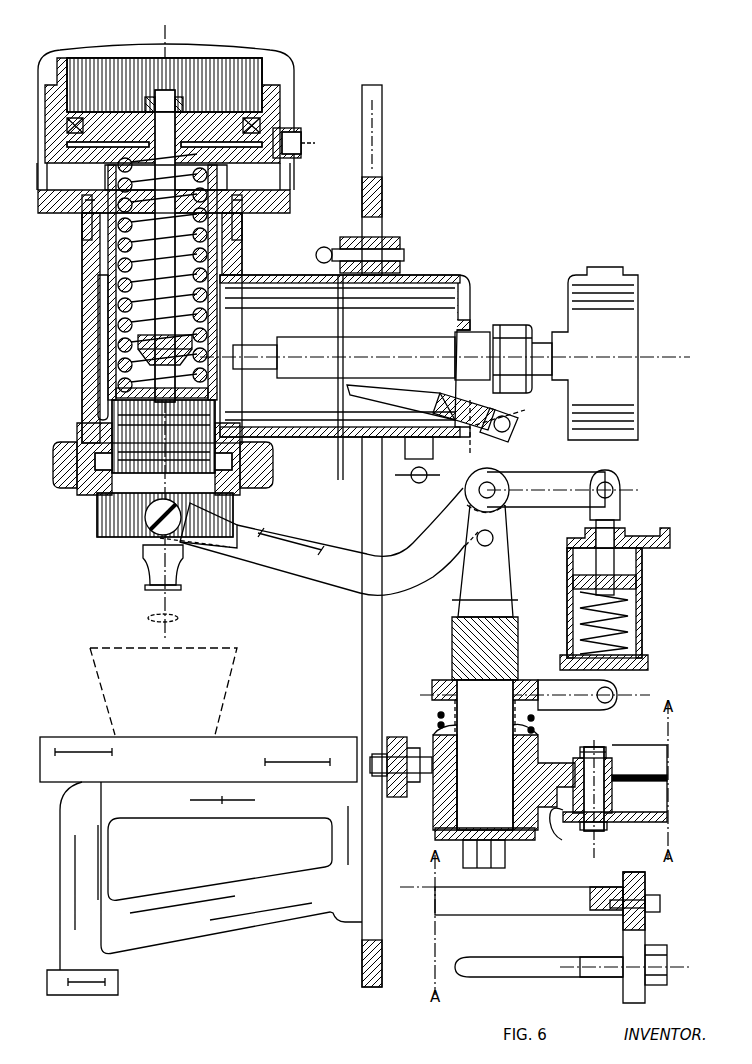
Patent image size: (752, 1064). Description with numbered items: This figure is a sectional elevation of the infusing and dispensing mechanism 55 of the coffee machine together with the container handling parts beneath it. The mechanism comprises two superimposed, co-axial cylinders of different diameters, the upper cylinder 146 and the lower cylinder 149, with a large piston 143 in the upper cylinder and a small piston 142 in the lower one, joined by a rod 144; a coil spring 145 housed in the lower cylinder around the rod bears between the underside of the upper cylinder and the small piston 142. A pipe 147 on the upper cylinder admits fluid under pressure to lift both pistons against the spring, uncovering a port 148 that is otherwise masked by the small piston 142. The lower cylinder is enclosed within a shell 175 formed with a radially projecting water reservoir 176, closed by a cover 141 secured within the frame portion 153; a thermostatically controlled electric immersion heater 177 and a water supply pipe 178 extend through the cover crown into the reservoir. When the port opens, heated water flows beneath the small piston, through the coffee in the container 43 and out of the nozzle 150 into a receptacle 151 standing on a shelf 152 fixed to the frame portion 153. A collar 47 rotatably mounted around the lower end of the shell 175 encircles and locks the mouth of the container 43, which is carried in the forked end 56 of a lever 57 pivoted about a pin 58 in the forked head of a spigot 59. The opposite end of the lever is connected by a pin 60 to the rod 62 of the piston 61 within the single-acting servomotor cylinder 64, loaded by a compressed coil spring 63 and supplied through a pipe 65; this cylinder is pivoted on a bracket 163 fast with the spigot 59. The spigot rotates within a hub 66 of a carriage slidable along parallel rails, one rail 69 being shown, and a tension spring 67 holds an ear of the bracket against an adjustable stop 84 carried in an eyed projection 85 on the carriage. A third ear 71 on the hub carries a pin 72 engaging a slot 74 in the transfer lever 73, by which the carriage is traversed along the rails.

The upper cylinder 146 is at (57, 105).
The large piston 143 is at (205, 112).
The pipe 147 is at (300, 128).
The rod 144 is at (157, 215).
The coil spring 145 is at (108, 285).
The lower cylinder 149 is at (116, 330).
The infusing and dispensing mechanism 55 is at (76, 369).
The small piston 142 is at (112, 440).
The shell 175 is at (100, 450).
The collar 47 is at (64, 488).
The port 148 is at (265, 482).
The container 43 is at (100, 537).
The coffee dispensing nozzle 150 is at (150, 590).
The forked end 56 is at (226, 548).
The lever 57 is at (318, 572).
The frame portion 153 is at (360, 945).
The water reservoir 176 is at (300, 270).
The cover 141 is at (467, 265).
The electric immersion heater 177 is at (575, 290).
The water supply pipe 178 is at (510, 415).
The pin 58 is at (492, 487).
The pin 60 is at (612, 487).
The rod 62 is at (606, 548).
The pipe 65 is at (660, 535).
The single-acting servomotor cylinder 64 is at (567, 565).
The piston 61 is at (630, 580).
The compressed coil spring 63 is at (620, 625).
The spigot 59 is at (465, 612).
The bracket 163 is at (553, 688).
The hub 66 is at (440, 745).
The tension spring 67 is at (538, 718).
The eyed projection 85 is at (396, 800).
The adjustable stop 84 is at (375, 755).
The rail 69 is at (636, 762).
The slot 74 is at (625, 810).
The lever 73 is at (620, 824).
The pin 72 is at (606, 822).
The third ear 71 is at (555, 805).
The receptacle 151 is at (105, 700).
The shelf 152 is at (70, 765).